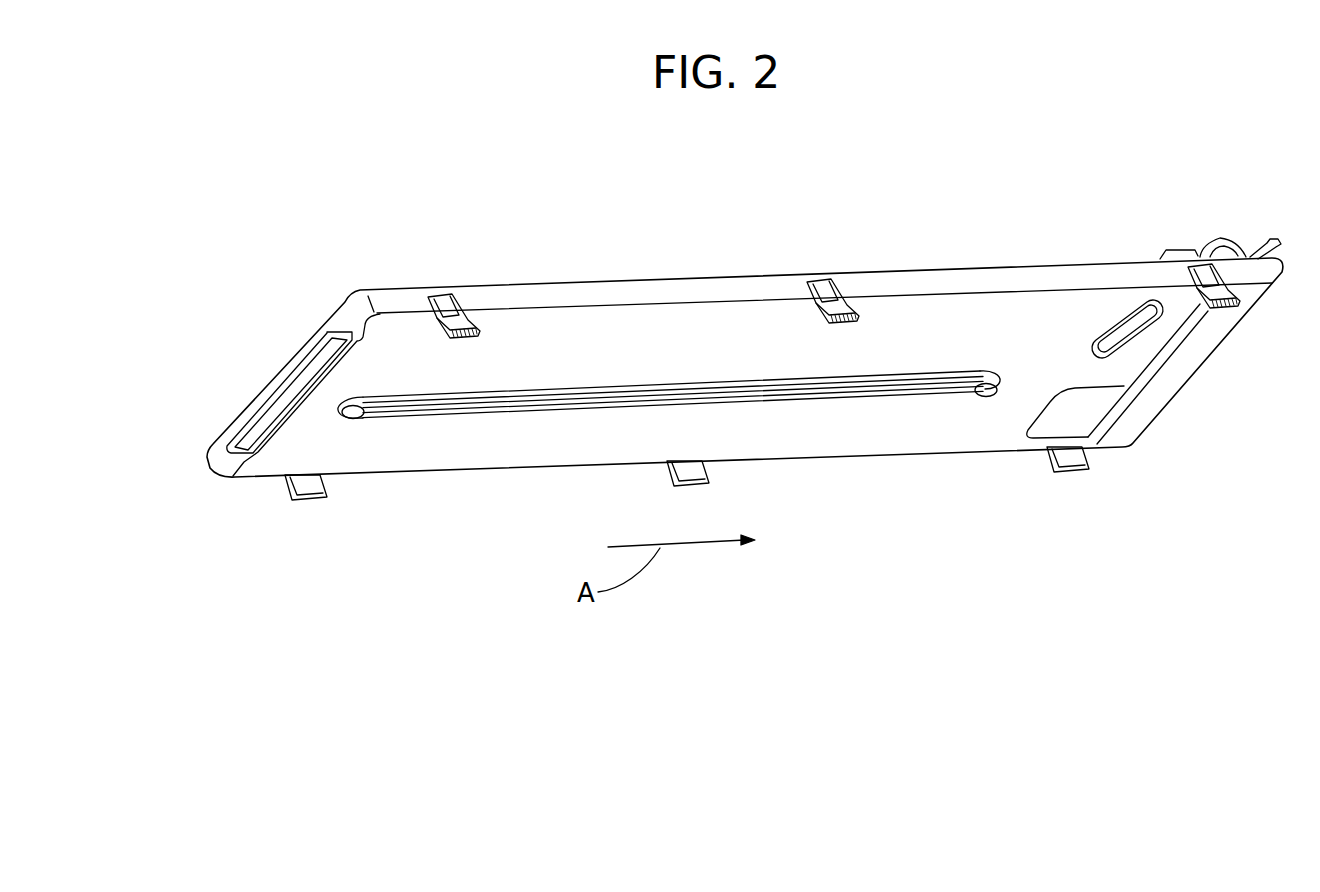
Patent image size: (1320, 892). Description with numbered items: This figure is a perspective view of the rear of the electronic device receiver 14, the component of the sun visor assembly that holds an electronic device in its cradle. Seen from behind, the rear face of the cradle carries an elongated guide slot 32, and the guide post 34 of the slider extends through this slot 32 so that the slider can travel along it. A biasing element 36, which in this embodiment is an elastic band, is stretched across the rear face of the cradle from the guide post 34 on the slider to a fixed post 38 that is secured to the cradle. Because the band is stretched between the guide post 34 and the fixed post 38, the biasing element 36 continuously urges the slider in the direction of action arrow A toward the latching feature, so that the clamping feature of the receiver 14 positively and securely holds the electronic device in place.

The electronic device receiver 14 is at (236, 502).
The guide slot 32 is at (890, 385).
The guide post 34 is at (357, 418).
The biasing element 36 is at (873, 378).
The fixed post 38 is at (987, 396).